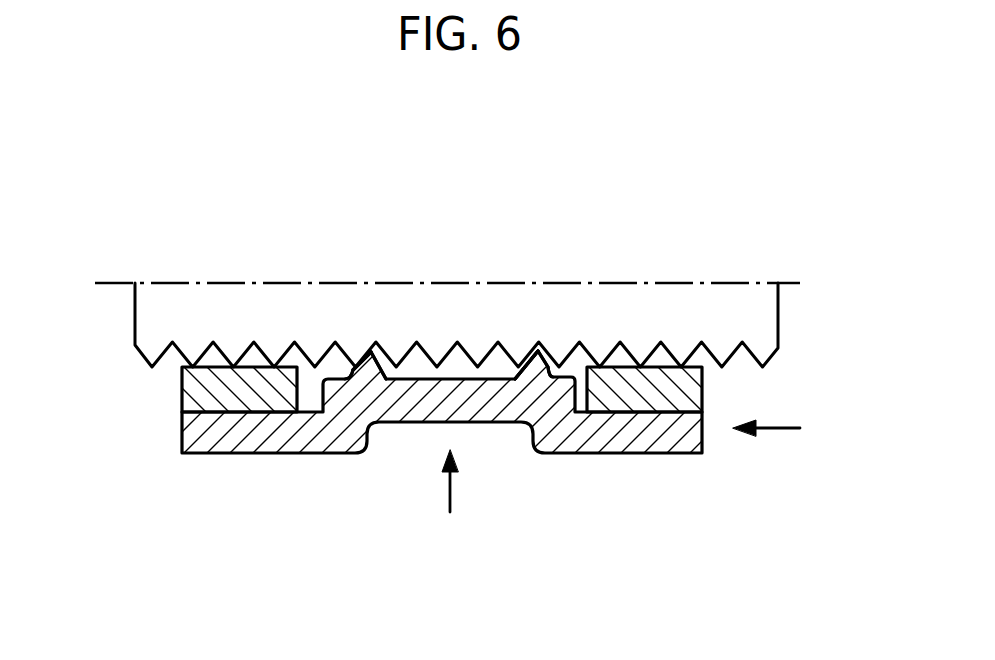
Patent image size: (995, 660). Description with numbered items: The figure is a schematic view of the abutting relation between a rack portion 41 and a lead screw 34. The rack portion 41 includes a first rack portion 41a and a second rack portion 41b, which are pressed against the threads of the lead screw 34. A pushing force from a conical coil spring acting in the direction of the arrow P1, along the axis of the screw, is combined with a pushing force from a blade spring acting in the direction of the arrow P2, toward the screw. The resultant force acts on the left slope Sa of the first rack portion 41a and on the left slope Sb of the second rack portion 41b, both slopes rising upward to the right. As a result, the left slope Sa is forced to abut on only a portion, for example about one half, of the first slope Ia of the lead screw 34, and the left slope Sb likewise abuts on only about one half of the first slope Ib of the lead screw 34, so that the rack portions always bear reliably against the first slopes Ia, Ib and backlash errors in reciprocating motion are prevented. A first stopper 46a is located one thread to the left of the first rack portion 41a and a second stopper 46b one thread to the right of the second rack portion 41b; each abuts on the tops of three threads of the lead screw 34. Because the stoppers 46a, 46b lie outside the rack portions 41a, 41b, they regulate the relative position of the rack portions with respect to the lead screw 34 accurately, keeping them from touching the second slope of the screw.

The lead screw 34 is at (758, 311).
The rack portion 41 is at (413, 398).
The first rack portion 41a is at (378, 363).
The second rack portion 41b is at (545, 362).
The first stopper 46a is at (210, 387).
The second stopper 46b is at (670, 388).
The first slope of the lead screw Ia is at (365, 352).
The first slope of the lead screw Ib is at (531, 354).
The left slope of the first rack portion Sa is at (353, 369).
The left slope of the second rack portion Sb is at (528, 363).
The direction of pushing force by the conical coil spring P1 is at (775, 430).
The direction of pushing force by the blade spring P2 is at (452, 487).